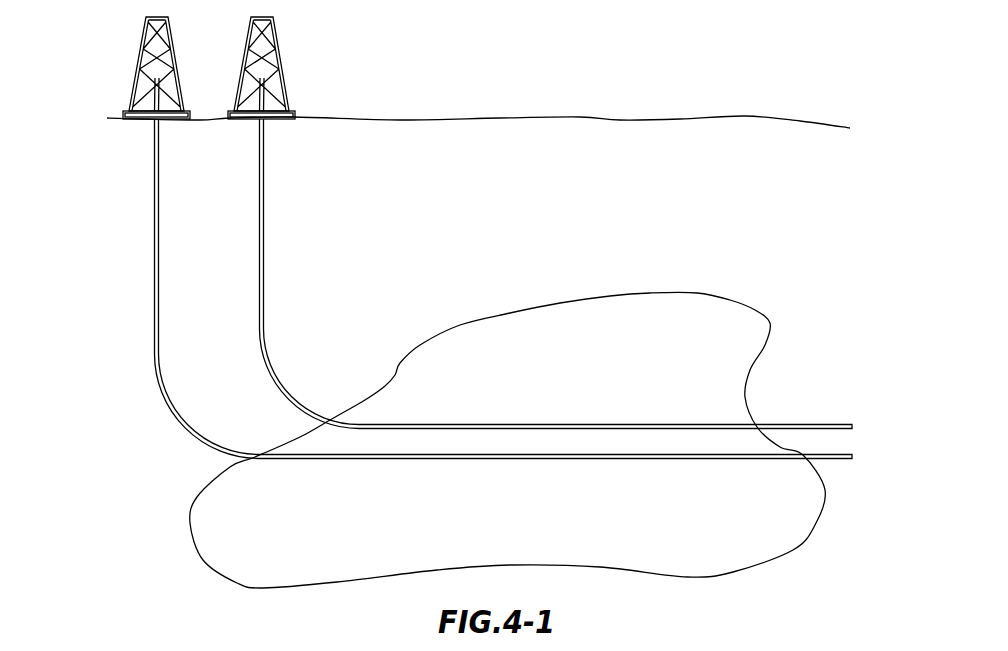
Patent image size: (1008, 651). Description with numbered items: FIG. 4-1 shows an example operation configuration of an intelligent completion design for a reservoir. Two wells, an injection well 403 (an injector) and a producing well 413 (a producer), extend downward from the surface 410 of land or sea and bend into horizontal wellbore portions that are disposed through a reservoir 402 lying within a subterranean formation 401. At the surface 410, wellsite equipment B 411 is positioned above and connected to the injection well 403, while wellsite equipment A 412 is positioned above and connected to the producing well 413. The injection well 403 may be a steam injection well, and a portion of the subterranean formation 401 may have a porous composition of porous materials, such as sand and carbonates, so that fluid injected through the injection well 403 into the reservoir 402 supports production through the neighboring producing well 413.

The subterranean formation 401 is at (758, 199).
The reservoir 402 is at (662, 389).
The injection well 403 is at (277, 357).
The surface 410 is at (717, 113).
The wellsite equipment B 411 is at (290, 49).
The wellsite equipment A 412 is at (140, 50).
The producing well 413 is at (150, 353).